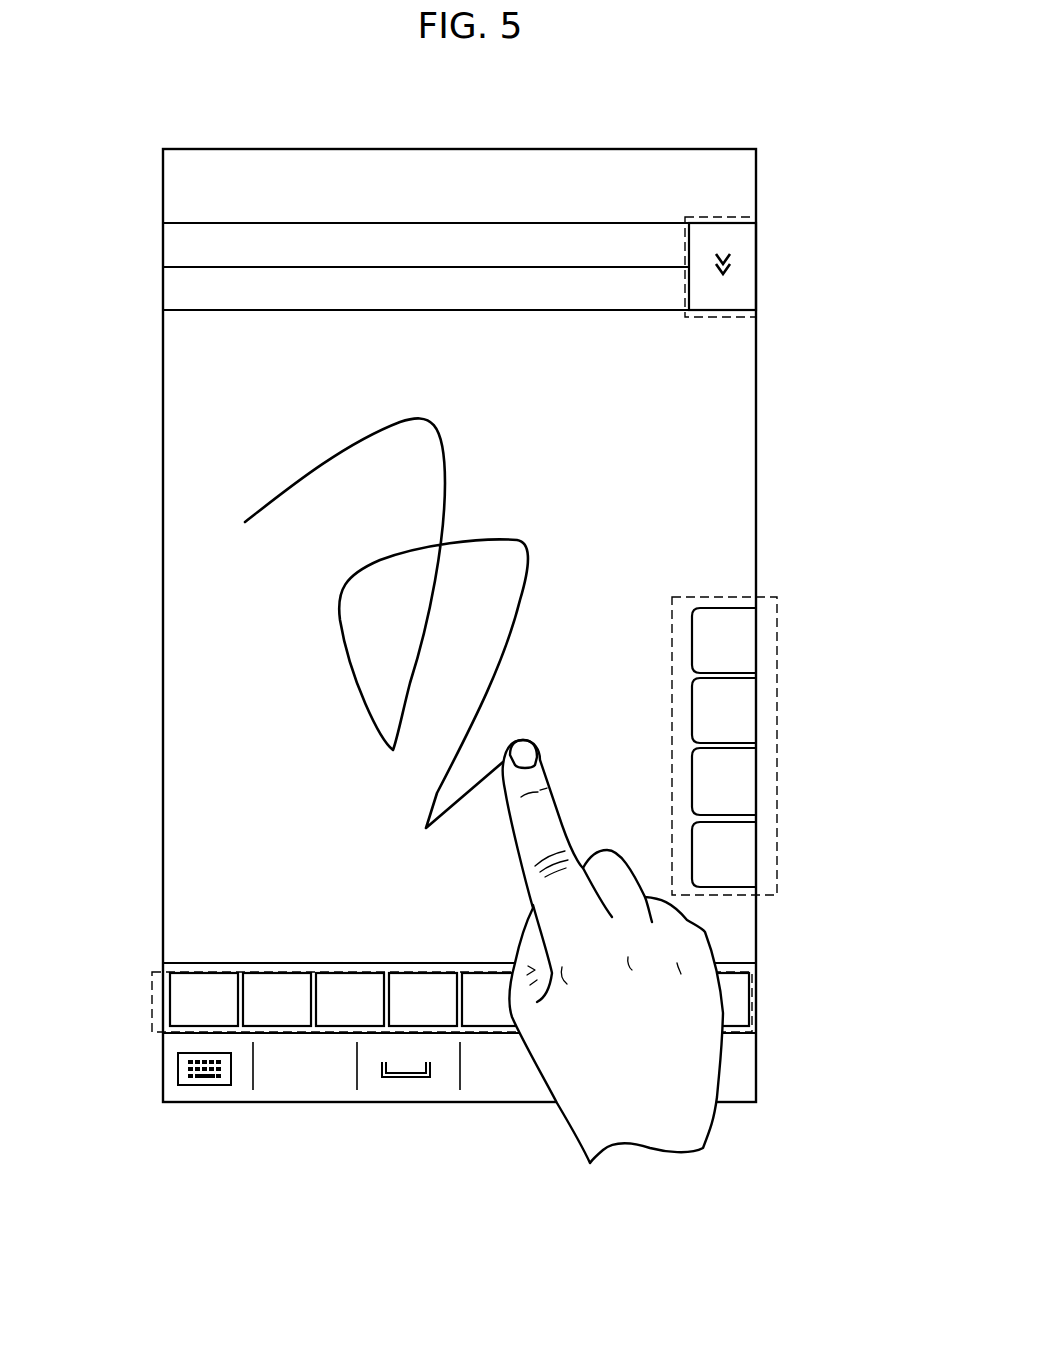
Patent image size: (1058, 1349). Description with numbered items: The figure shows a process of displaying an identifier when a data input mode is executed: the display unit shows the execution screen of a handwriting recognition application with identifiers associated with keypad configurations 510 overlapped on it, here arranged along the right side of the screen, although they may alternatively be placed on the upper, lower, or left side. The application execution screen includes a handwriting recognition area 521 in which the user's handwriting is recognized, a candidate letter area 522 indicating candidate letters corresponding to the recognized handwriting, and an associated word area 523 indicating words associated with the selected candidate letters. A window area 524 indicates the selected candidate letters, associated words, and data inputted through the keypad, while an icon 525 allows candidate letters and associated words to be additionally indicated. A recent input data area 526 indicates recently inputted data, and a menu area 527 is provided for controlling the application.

The identifiers associated with keypad configurations 510 is at (777, 630).
The handwriting recognition area 521 is at (685, 502).
The candidate letter area 522 is at (607, 257).
The associated word area 523 is at (587, 302).
The window area 524 is at (408, 153).
The icon 525 is at (728, 218).
The recent input data area 526 is at (152, 1002).
The menu area 527 is at (277, 1085).